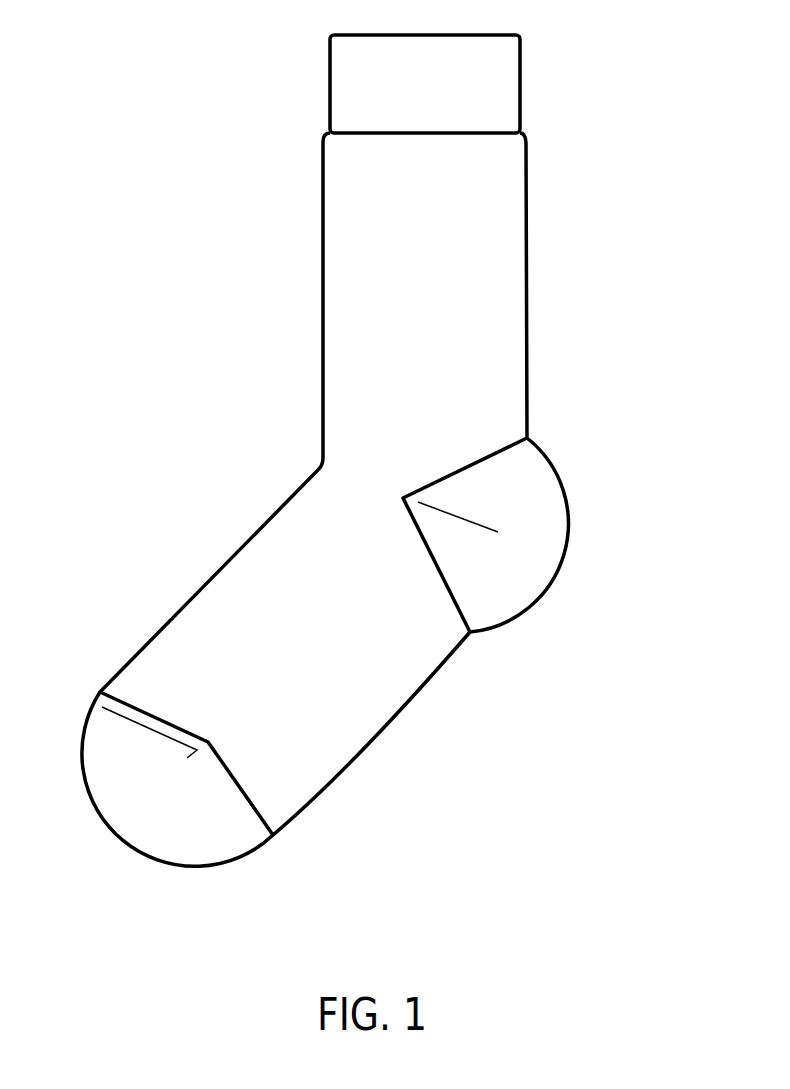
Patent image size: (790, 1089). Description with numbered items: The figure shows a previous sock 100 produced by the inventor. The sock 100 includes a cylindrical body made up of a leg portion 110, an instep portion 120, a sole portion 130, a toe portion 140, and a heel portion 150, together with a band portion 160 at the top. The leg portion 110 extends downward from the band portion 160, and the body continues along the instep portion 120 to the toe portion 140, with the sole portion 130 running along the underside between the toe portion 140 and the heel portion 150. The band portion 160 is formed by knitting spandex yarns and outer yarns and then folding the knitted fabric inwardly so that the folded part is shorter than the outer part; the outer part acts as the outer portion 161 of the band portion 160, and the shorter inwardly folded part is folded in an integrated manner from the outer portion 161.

The sock 100 is at (538, 277).
The leg portion 110 is at (368, 318).
The instep portion 120 is at (257, 593).
The sole portion 130 is at (357, 665).
The toe portion 140 is at (153, 807).
The heel portion 150 is at (507, 540).
The band portion 160 is at (526, 82).
The outer portion 161 is at (392, 82).